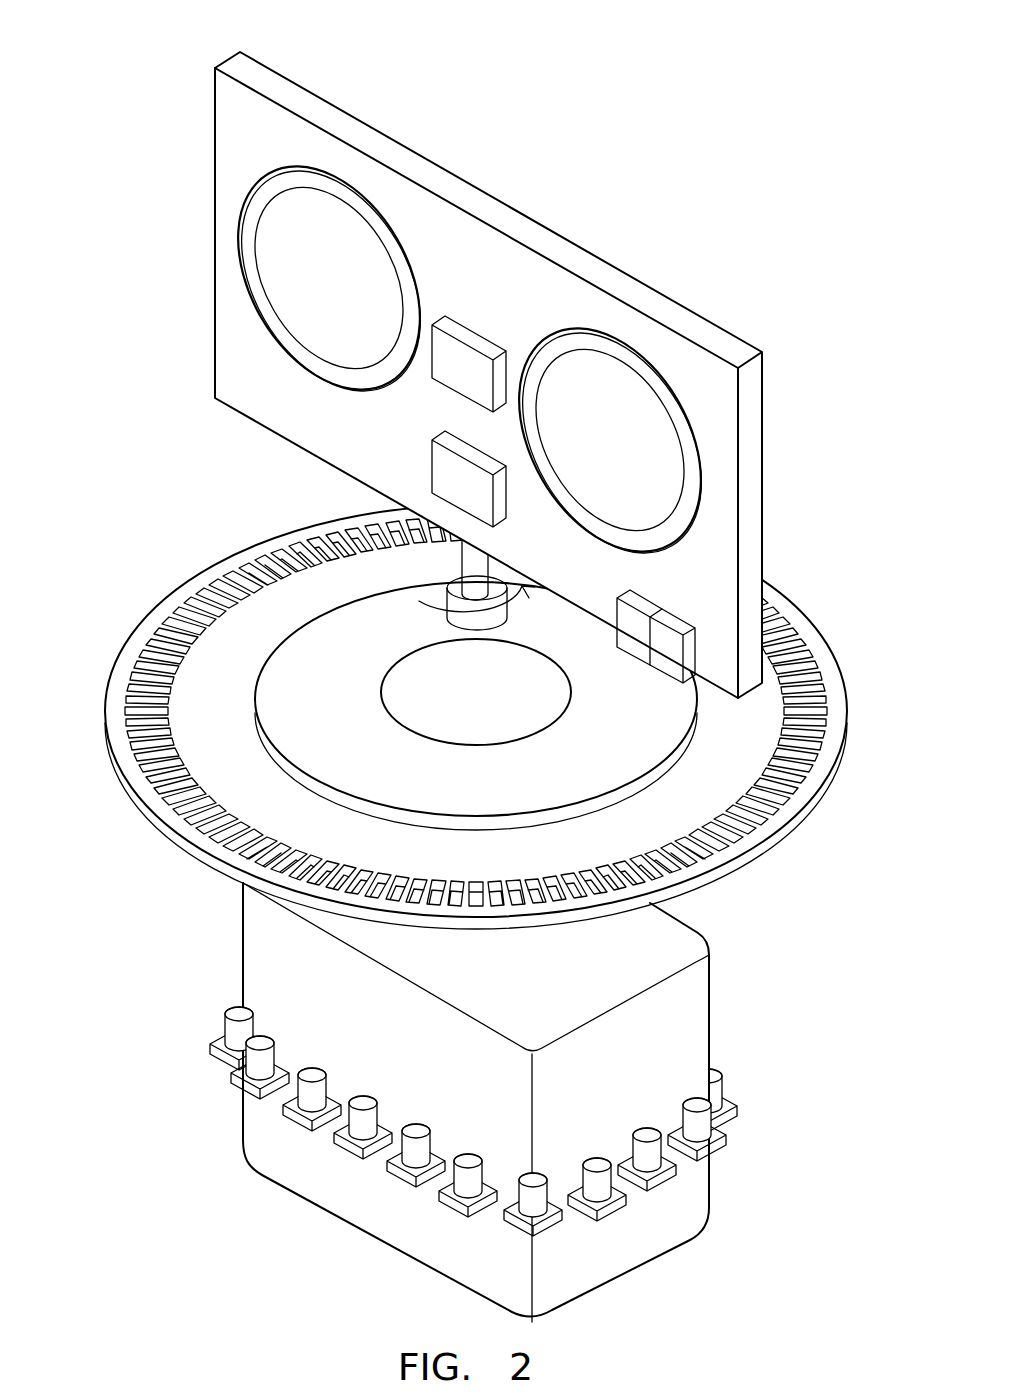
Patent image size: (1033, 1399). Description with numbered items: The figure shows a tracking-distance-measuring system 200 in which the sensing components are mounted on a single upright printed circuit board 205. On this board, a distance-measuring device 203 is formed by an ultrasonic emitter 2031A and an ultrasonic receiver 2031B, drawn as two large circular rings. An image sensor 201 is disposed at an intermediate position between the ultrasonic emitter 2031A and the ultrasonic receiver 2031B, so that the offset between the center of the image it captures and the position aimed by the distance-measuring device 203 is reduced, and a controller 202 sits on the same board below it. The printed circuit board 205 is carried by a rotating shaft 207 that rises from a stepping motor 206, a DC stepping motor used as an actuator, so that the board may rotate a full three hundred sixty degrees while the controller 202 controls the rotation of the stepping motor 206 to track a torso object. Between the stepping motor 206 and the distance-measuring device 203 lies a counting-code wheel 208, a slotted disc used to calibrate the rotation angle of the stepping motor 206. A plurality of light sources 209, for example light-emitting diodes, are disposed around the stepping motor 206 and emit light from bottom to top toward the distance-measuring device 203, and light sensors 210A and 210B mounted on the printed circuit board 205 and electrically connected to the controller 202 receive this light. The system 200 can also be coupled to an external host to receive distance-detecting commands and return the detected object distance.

The tracking-distance-measuring system 200 is at (118, 79).
The image sensor 201 is at (457, 378).
The controller 202 is at (447, 472).
The distance-measuring device 203 is at (357, 196).
The ultrasonic emitter 2031A is at (372, 292).
The ultrasonic receiver 2031B is at (655, 455).
The printed circuit board 205 is at (233, 150).
The stepping motor 206 is at (270, 957).
The rotating shaft 207 is at (467, 560).
The counting-code wheel 208 is at (253, 600).
The light sources 209 is at (401, 1056).
The light sensor 210A is at (632, 602).
The light sensor 210B is at (673, 617).